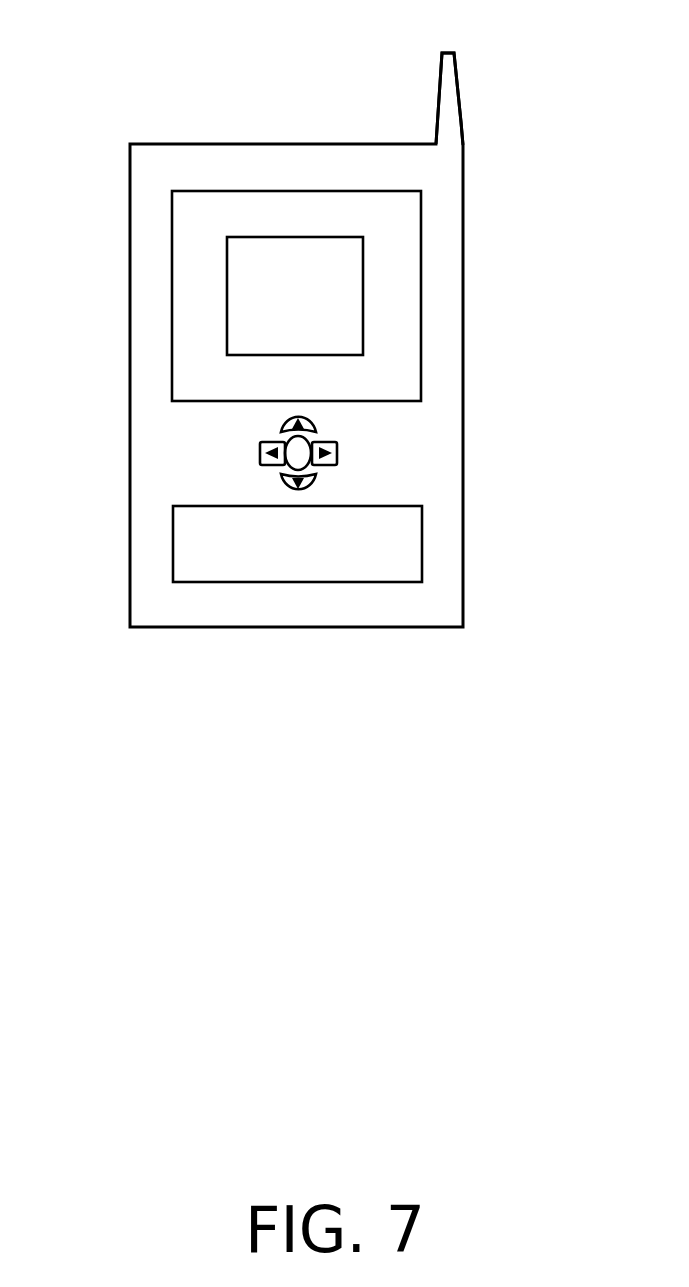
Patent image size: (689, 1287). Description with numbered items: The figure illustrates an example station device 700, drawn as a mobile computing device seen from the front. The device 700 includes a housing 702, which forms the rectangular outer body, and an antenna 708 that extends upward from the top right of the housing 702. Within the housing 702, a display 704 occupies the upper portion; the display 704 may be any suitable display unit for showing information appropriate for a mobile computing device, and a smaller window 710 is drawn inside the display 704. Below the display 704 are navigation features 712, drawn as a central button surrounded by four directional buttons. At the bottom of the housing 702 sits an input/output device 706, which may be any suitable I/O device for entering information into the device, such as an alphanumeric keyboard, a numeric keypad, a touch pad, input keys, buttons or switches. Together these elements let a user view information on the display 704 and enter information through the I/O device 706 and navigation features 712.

The device 700 is at (146, 68).
The housing 702 is at (467, 387).
The display 704 is at (425, 212).
The input/output (I/O) device 706 is at (426, 539).
The antenna 708 is at (434, 94).
The display window 710 is at (370, 312).
The navigation features 712 is at (342, 454).